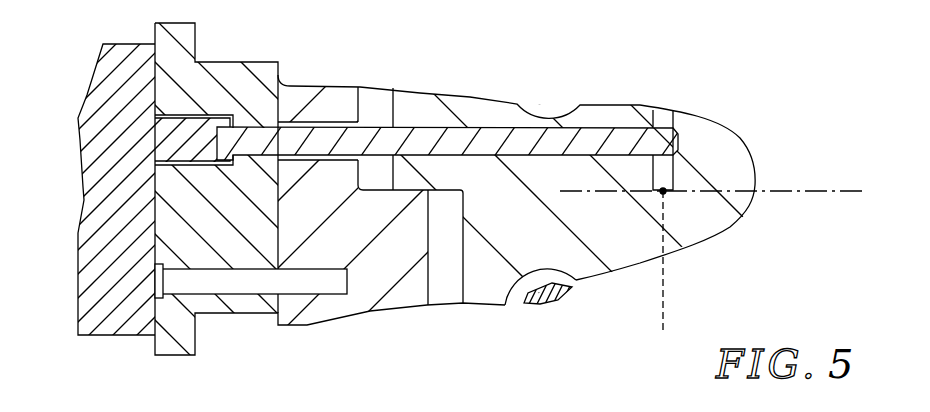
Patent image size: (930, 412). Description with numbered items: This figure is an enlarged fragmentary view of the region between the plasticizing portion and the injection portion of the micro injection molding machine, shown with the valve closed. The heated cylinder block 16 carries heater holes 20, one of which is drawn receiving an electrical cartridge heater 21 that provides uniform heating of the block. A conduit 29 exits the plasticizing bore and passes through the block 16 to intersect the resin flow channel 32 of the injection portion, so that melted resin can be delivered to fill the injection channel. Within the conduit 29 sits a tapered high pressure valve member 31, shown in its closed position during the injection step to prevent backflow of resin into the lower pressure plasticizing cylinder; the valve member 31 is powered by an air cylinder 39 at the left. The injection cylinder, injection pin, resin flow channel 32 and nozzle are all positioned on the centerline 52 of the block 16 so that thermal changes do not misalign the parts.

The heated cylinder block 16 is at (737, 172).
The heater hole 20 is at (568, 285).
The electrical cartridge heater 21 is at (552, 302).
The conduit 29 is at (667, 163).
The valve member 31 is at (413, 133).
The resin flow channel 32 is at (673, 180).
The air cylinder 39 is at (88, 252).
The centerline 52 is at (720, 224).